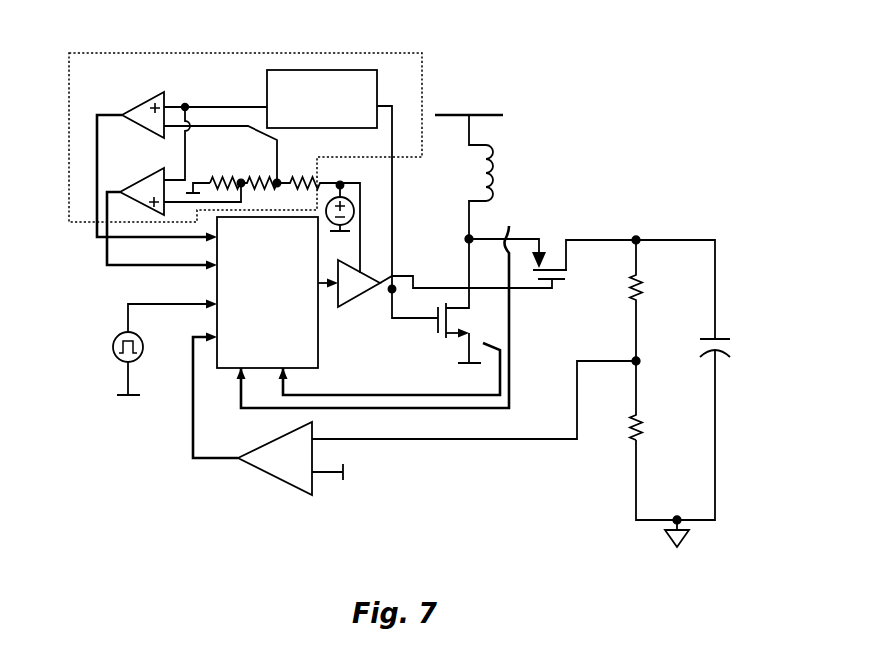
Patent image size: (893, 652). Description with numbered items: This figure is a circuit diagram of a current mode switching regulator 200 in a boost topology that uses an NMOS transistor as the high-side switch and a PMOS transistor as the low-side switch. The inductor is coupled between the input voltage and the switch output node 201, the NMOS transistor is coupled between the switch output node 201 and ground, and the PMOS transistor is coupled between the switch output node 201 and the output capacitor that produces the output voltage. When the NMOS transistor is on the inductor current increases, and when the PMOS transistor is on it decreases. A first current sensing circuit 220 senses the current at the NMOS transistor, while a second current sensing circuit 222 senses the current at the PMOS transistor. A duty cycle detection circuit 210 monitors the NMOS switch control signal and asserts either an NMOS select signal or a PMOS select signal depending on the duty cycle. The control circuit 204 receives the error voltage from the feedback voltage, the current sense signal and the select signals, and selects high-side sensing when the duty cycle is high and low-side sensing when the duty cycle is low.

The switching regulator 200 is at (553, 58).
The switch output node 201 is at (466, 237).
The control circuit 204 is at (283, 353).
The duty cycle detection circuit 210 is at (323, 54).
The first current sensing circuit 220 is at (462, 344).
The second current sensing circuit 222 is at (504, 250).